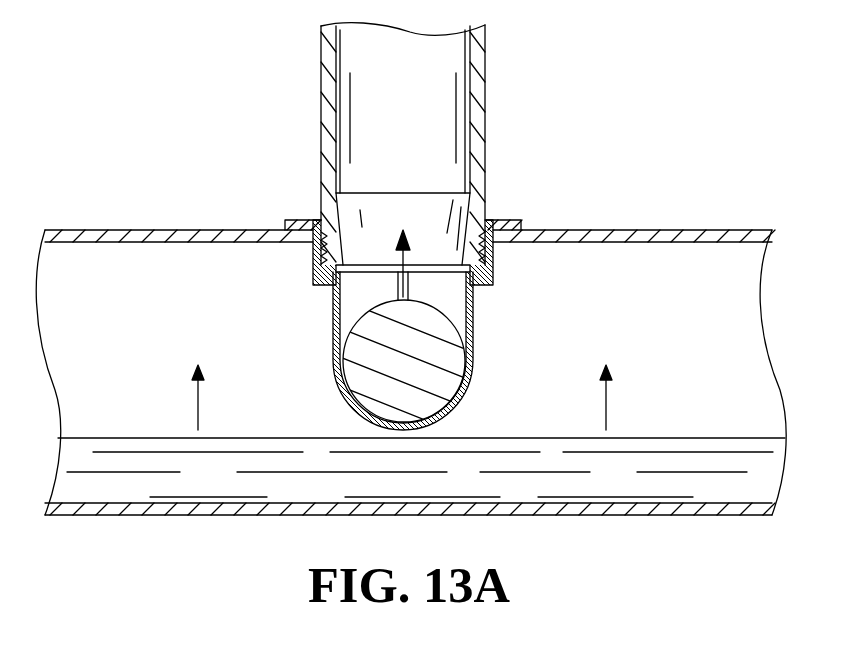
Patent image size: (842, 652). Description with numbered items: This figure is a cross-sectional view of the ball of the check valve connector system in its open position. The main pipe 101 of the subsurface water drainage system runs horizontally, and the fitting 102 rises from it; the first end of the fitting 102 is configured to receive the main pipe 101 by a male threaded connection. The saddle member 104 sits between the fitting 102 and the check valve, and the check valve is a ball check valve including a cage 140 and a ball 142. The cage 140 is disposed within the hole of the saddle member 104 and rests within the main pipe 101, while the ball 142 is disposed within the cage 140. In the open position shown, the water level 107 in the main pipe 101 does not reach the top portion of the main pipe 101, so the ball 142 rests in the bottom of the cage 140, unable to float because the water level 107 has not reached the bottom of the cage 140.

The main pipe 101 is at (636, 230).
The fitting 102 is at (485, 132).
The saddle member 104 is at (301, 219).
The water level 107 is at (725, 482).
The cage 140 is at (457, 410).
The ball 142 is at (375, 383).